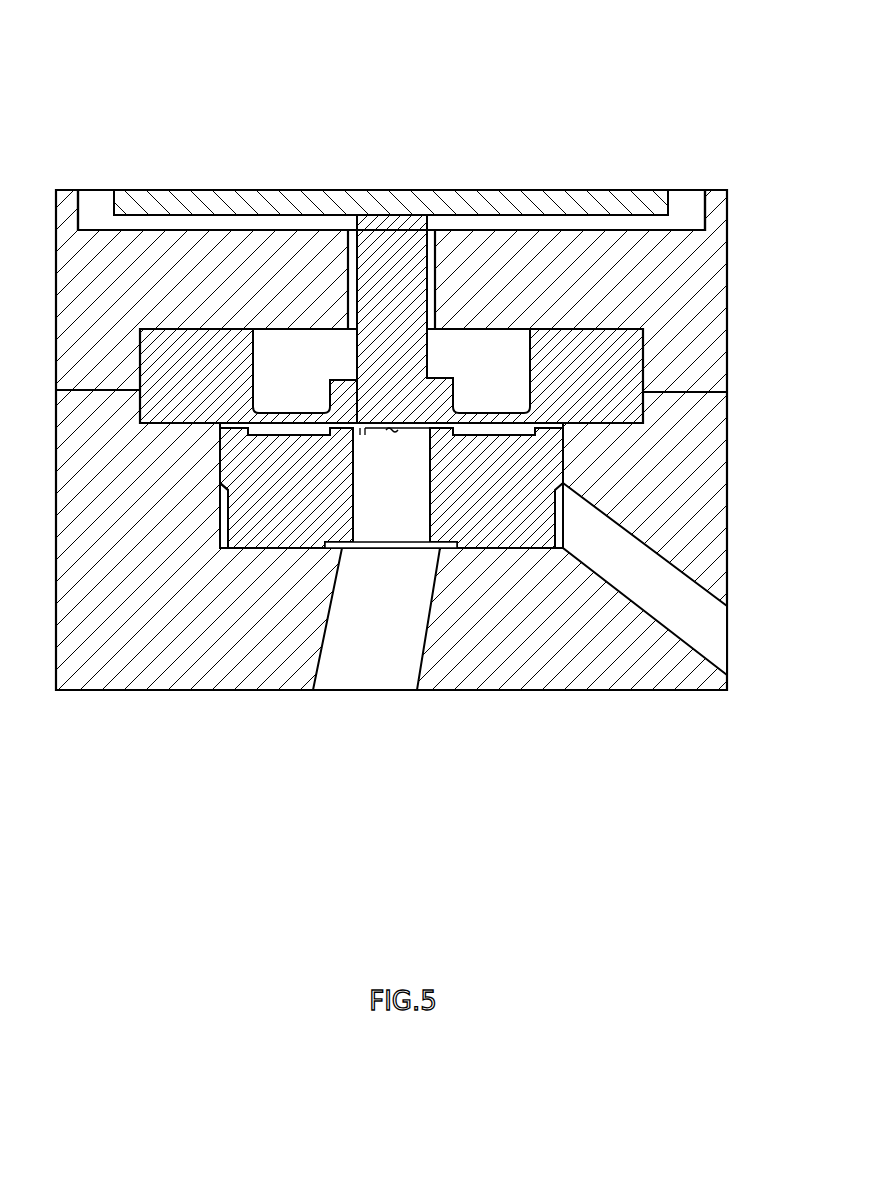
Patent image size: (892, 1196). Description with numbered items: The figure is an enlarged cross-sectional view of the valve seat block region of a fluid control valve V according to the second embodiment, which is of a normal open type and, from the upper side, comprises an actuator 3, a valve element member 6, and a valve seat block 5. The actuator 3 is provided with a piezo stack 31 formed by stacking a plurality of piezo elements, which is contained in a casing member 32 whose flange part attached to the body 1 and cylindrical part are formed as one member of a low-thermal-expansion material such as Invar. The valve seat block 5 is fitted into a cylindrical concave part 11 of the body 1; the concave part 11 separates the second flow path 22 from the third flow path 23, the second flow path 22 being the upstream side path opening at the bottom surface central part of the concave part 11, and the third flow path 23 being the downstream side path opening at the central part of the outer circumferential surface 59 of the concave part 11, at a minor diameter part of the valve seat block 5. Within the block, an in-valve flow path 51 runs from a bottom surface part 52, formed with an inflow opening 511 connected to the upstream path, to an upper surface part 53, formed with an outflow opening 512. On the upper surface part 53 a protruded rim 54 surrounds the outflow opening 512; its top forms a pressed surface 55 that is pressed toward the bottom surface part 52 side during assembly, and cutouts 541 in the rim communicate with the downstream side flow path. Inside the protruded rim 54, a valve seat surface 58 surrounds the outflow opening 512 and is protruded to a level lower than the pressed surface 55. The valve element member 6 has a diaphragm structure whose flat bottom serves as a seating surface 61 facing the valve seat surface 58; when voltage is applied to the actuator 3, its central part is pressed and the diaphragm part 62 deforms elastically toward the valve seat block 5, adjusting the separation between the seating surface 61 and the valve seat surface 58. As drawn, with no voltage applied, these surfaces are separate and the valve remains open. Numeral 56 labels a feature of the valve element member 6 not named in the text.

The body 1 is at (172, 692).
The actuator 3 is at (391, 124).
The valve seat block 5 is at (325, 494).
The valve element member 6 is at (391, 319).
The concave part 11 is at (565, 466).
The second flow path 22 is at (390, 692).
The third flow path 23 is at (643, 613).
The piezo stack 31 is at (268, 190).
The casing member 32 is at (66, 190).
The in-valve flow path 51 is at (357, 492).
The bottom surface part 52 is at (390, 555).
The upper surface part 53 is at (417, 421).
The protruded rim 54 is at (234, 430).
The pressed surface 55 is at (234, 420).
The cavity 56 is at (494, 412).
The valve seat surface 58 is at (342, 392).
The outer circumferential surface 59 is at (215, 491).
The seating surface 61 is at (432, 445).
The diaphragm part 62 is at (293, 412).
The inflow opening 511 is at (355, 550).
The outflow opening 512 is at (365, 426).
The cutouts 541 is at (392, 433).
The fluid control valve V is at (528, 134).